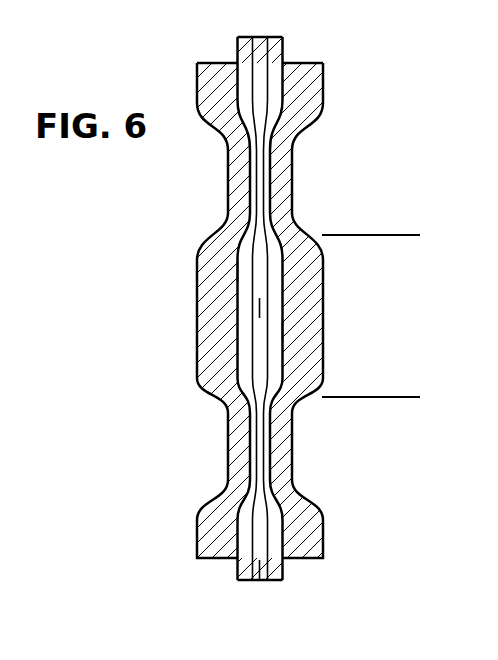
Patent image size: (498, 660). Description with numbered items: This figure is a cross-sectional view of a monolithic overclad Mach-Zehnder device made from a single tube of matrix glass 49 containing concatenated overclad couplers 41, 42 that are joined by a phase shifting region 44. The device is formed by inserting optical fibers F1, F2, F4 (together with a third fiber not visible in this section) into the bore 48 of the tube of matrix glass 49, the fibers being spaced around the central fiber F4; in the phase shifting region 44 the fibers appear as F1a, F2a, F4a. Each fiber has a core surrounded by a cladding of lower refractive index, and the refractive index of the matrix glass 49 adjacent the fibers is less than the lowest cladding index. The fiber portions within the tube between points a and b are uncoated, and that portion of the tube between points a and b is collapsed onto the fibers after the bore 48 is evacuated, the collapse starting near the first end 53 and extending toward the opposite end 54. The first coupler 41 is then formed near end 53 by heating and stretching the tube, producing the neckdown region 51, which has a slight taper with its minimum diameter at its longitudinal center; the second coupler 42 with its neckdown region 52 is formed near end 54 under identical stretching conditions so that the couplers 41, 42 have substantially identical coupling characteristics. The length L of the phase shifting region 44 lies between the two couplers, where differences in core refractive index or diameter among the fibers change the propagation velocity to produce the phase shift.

The bore 48 is at (280, 68).
The tube end 54 is at (217, 63).
The first end of the tube 53 is at (307, 560).
The point a is at (324, 93).
The point b is at (322, 527).
The neckdown region of second coupler 52 is at (228, 175).
The region 51 is at (228, 442).
The overclad coupler 42 is at (290, 162).
The overclad coupler 41 is at (290, 450).
The phase shifting region 44 is at (322, 268).
The matrix glass 49 is at (322, 307).
The length of central portion L is at (402, 423).
The optical fiber F1 is at (242, 568).
The optical fiber F2 is at (271, 581).
The optical fiber F4 is at (258, 581).
The first fiber wall in central portion F1a is at (245, 278).
The second fiber wall in central portion F2a is at (258, 307).
The fiber core in central portion F4a is at (273, 332).